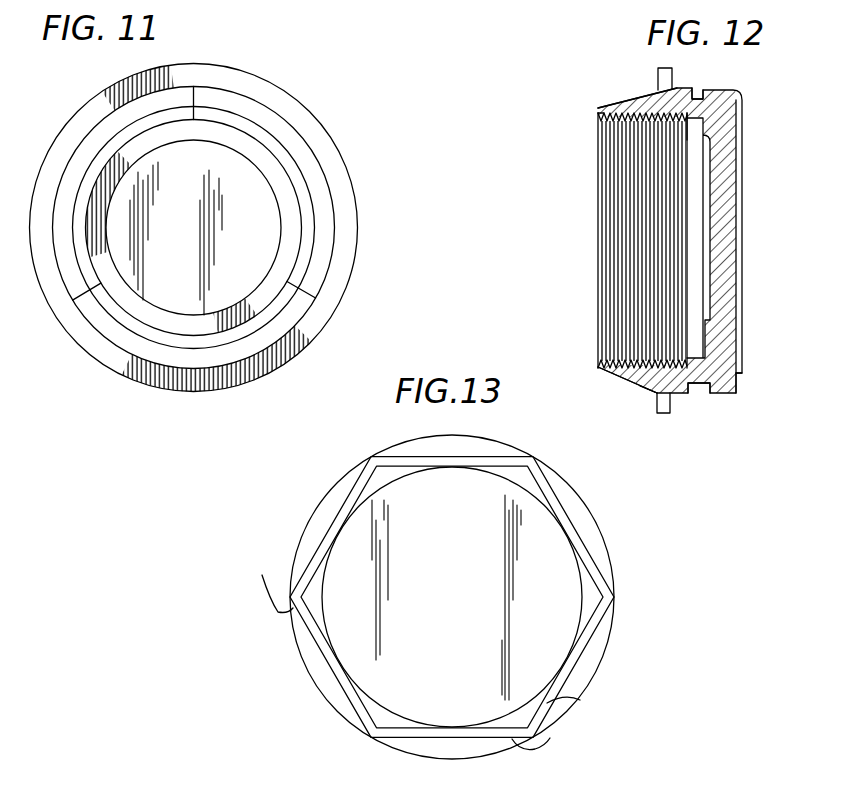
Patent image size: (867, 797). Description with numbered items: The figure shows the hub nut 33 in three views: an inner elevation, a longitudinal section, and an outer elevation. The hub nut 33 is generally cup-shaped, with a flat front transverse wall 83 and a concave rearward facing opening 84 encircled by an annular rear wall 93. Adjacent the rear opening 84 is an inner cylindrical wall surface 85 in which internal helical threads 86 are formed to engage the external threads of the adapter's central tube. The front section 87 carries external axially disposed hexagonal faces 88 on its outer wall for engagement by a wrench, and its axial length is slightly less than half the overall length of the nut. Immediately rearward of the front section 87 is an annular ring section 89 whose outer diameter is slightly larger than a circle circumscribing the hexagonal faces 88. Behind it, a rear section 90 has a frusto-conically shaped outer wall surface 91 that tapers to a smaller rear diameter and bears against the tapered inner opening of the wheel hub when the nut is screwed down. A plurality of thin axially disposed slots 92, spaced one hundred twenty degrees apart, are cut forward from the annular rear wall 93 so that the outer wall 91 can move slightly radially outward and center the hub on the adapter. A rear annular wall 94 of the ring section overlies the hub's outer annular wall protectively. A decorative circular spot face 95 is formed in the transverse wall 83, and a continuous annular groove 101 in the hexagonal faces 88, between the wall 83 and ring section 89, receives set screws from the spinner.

In FIG. 11, the hub nut 33 is at (322, 117).
In FIG. 12, the hub nut 33 is at (769, 149).
In FIG. 13, the hub nut 33 is at (624, 547).
In FIG. 12, the flat front transverse wall 83 is at (742, 377).
In FIG. 13, the flat front transverse wall 83 is at (540, 488).
In FIG. 12, the concave rearward facing opening 84 is at (647, 293).
In FIG. 11, the inner cylindrical wall surface 85 is at (298, 202).
In FIG. 12, the inner cylindrical wall surface 85 is at (687, 117).
In FIG. 12, the internal helical threads 86 is at (622, 122).
In FIG. 12, the front section 87 is at (680, 397).
In FIG. 13, the front section 87 is at (592, 640).
In FIG. 13, the hexagonal faces 88 is at (300, 572).
In FIG. 11, the annular ring section 89 is at (344, 167).
In FIG. 12, the annular ring section 89 is at (660, 413).
In FIG. 11, the rear section 90 is at (257, 370).
In FIG. 12, the rear section 90 is at (653, 393).
In FIG. 11, the frusto-conically shaped outer wall surface 91 is at (167, 357).
In FIG. 12, the frusto-conically shaped outer wall surface 91 is at (602, 379).
In FIG. 11, the axially disposed slots 92 is at (194, 98).
In FIG. 11, the annular rear wall 93 is at (82, 252).
In FIG. 12, the annular rear wall 93 is at (602, 112).
In FIG. 12, the rear annular wall 94 is at (657, 78).
In FIG. 12, the decorative circular spot face 95 is at (740, 306).
In FIG. 13, the decorative circular spot face 95 is at (547, 542).
In FIG. 12, the continuous annular groove 101 is at (703, 92).